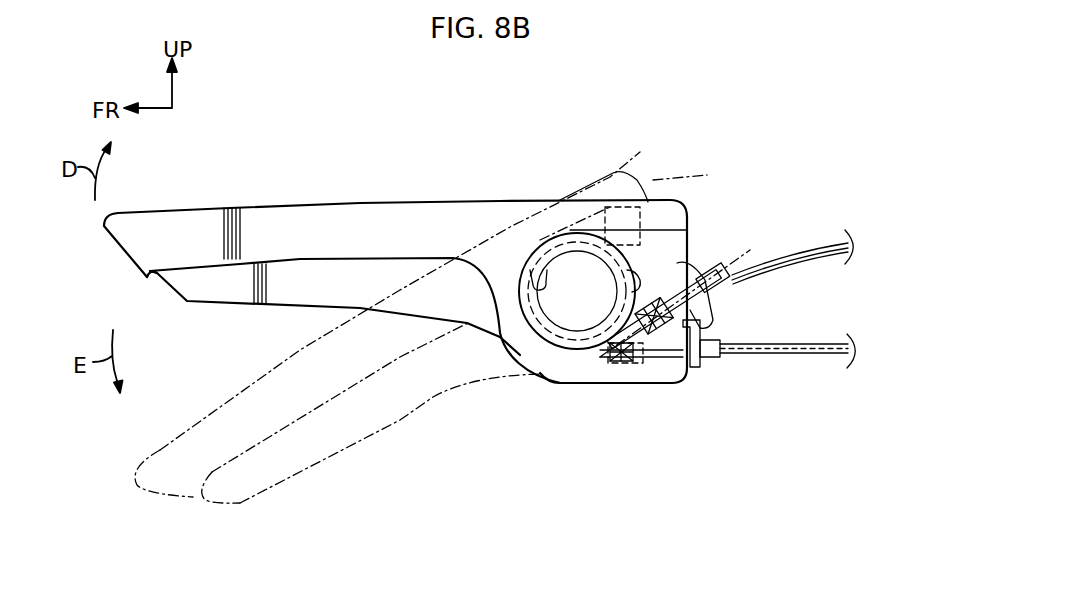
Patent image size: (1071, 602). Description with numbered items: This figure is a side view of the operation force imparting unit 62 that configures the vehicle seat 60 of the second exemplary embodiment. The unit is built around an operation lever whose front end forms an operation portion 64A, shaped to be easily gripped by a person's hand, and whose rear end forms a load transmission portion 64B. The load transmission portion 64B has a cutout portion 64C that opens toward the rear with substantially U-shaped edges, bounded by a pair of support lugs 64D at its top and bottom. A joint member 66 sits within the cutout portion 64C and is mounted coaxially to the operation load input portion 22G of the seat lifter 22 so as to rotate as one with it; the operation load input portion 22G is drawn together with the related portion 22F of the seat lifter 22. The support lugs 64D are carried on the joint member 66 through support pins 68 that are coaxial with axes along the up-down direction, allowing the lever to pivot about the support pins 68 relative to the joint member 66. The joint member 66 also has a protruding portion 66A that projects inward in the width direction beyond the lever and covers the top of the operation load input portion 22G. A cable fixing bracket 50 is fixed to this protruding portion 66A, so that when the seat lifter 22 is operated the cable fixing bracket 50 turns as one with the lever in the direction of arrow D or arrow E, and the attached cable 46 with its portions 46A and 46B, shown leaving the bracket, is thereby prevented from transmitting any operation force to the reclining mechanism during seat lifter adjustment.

The operation force imparting unit 62 is at (666, 125).
The vehicle seat 60 is at (481, 293).
The operation portion 64A is at (293, 382).
The load transmission portion 64B is at (687, 230).
The cutout portion 64C is at (532, 272).
The support lugs 64D is at (687, 227).
The joint member 66 is at (572, 260).
The protruding portion 66A is at (600, 383).
The support pins 68 is at (610, 205).
The cable fixing bracket 50 is at (720, 300).
The cable 46 is at (828, 264).
The cable end fitting 46A is at (728, 270).
The cable wire 46B is at (758, 262).
The operation load input portion 22G is at (563, 320).
The frame portion 22F is at (556, 373).
The seat lifter 22 is at (556, 373).